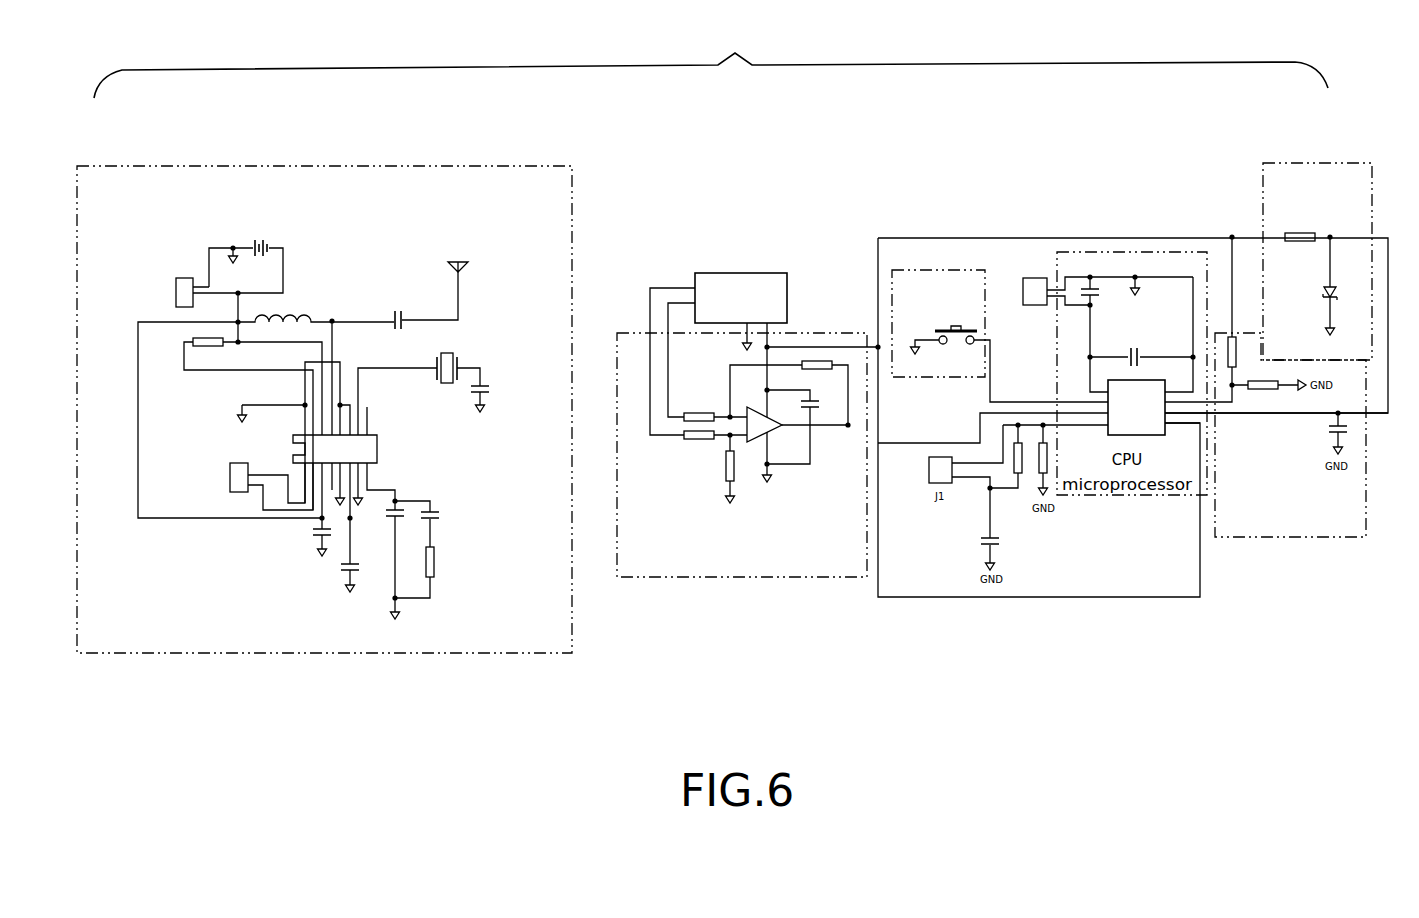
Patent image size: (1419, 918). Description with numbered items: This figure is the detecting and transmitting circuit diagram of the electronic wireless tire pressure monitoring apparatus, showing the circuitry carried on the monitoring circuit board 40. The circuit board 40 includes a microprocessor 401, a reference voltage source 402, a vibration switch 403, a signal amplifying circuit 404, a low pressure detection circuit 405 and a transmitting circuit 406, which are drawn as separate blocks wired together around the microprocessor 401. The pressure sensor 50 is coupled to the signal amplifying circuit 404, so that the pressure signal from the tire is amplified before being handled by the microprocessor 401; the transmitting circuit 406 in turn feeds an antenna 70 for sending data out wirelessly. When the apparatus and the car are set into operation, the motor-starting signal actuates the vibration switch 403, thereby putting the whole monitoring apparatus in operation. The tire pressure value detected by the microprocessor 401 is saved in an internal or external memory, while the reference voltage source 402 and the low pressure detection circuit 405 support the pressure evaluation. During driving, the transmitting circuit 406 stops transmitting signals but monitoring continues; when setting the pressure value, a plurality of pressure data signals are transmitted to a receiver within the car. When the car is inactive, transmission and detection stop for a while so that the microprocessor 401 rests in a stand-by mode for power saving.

The circuit board 40 is at (711, 63).
The transmitting circuit 406 is at (366, 409).
The antenna 70 is at (463, 272).
The pressure sensor 50 is at (735, 271).
The signal amplifying circuit 404 is at (823, 343).
The vibration switch 403 is at (940, 275).
The microprocessor 401 is at (1145, 262).
The reference voltage source 402 is at (1293, 162).
The low pressure detection circuit 405 is at (1290, 540).